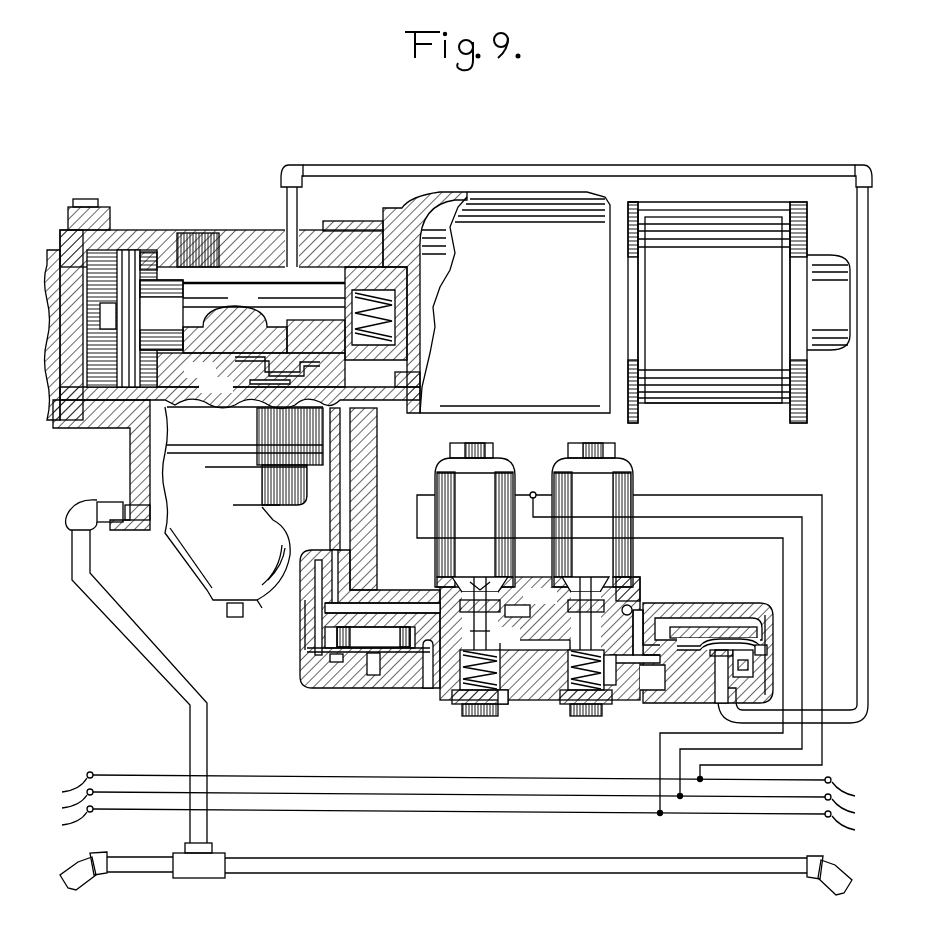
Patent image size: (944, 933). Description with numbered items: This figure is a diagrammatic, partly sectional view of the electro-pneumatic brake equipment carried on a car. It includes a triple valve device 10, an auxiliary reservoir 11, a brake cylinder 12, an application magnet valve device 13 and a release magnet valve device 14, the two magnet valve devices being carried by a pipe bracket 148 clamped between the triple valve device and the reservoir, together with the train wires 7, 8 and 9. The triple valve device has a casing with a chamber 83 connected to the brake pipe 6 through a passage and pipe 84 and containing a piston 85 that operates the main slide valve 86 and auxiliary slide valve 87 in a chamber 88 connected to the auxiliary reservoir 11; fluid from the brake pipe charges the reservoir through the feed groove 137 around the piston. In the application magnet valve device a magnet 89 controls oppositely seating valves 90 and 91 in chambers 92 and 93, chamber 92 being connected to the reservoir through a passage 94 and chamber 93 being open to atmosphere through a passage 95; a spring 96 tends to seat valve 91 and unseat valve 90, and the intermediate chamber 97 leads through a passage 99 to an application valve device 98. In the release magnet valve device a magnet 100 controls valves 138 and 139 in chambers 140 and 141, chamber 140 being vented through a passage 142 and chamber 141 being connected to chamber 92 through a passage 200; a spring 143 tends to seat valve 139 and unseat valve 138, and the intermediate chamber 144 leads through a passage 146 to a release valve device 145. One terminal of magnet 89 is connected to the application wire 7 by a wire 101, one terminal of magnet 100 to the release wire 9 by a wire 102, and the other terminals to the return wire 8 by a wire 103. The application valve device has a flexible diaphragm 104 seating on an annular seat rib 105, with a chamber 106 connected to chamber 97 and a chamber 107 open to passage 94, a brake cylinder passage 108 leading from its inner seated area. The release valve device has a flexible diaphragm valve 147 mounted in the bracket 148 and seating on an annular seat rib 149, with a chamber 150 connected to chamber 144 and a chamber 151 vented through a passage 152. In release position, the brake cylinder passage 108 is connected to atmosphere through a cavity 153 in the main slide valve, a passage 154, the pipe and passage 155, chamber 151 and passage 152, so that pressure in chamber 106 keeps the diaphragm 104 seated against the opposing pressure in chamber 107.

The brake pipe 6 is at (415, 863).
The application wire 7 is at (360, 810).
The return wire 8 is at (433, 793).
The release wire 9 is at (343, 778).
The triple valve device 10 is at (196, 243).
The auxiliary reservoir 11 is at (514, 193).
The brake cylinder 12 is at (740, 390).
The application magnet valve device 13 is at (456, 512).
The release magnet valve device 14 is at (625, 513).
The chamber 83 is at (104, 260).
The passage and pipe 84 is at (153, 460).
The piston 85 is at (124, 265).
The main slide valve 86 is at (212, 345).
The auxiliary slide valve 87 is at (161, 315).
The chamber 88 is at (202, 292).
The magnet 89 is at (448, 479).
The valve 90 is at (480, 580).
The valve 91 is at (430, 680).
The chamber 92 is at (462, 590).
The chamber 93 is at (458, 682).
The passage 94 is at (368, 550).
The passage 95 is at (508, 704).
The spring 96 is at (468, 714).
The chamber 97 is at (495, 634).
The application valve device 98 is at (365, 668).
The passage 99 is at (427, 630).
The magnet 100 is at (636, 492).
The wire 101 is at (668, 541).
The wire 102 is at (786, 495).
The wire 103 is at (750, 521).
The flexible diaphragm 104 is at (335, 650).
The annular seat rib 105 is at (342, 672).
The chamber 106 is at (340, 634).
The chamber 107 is at (403, 660).
The brake cylinder passage 108 is at (425, 388).
The feed groove 137 is at (146, 262).
The valve 138 is at (586, 580).
The valve 139 is at (612, 668).
The chamber 140 is at (574, 586).
The chamber 141 is at (566, 688).
The passage 142 is at (632, 578).
The spring 143 is at (582, 716).
The chamber 144 is at (648, 614).
The release valve device 145 is at (772, 698).
The passage 146 is at (658, 670).
The flexible diaphragm valve 147 is at (722, 644).
The pipe bracket 148 is at (334, 518).
The annular seat rib 149 is at (748, 654).
The chamber 150 is at (690, 625).
The chamber 151 is at (765, 650).
The passage 152 is at (762, 680).
The cavity 153 is at (232, 358).
The passage 154 is at (250, 382).
The pipe and passage 155 is at (335, 170).
The passage 200 is at (515, 610).